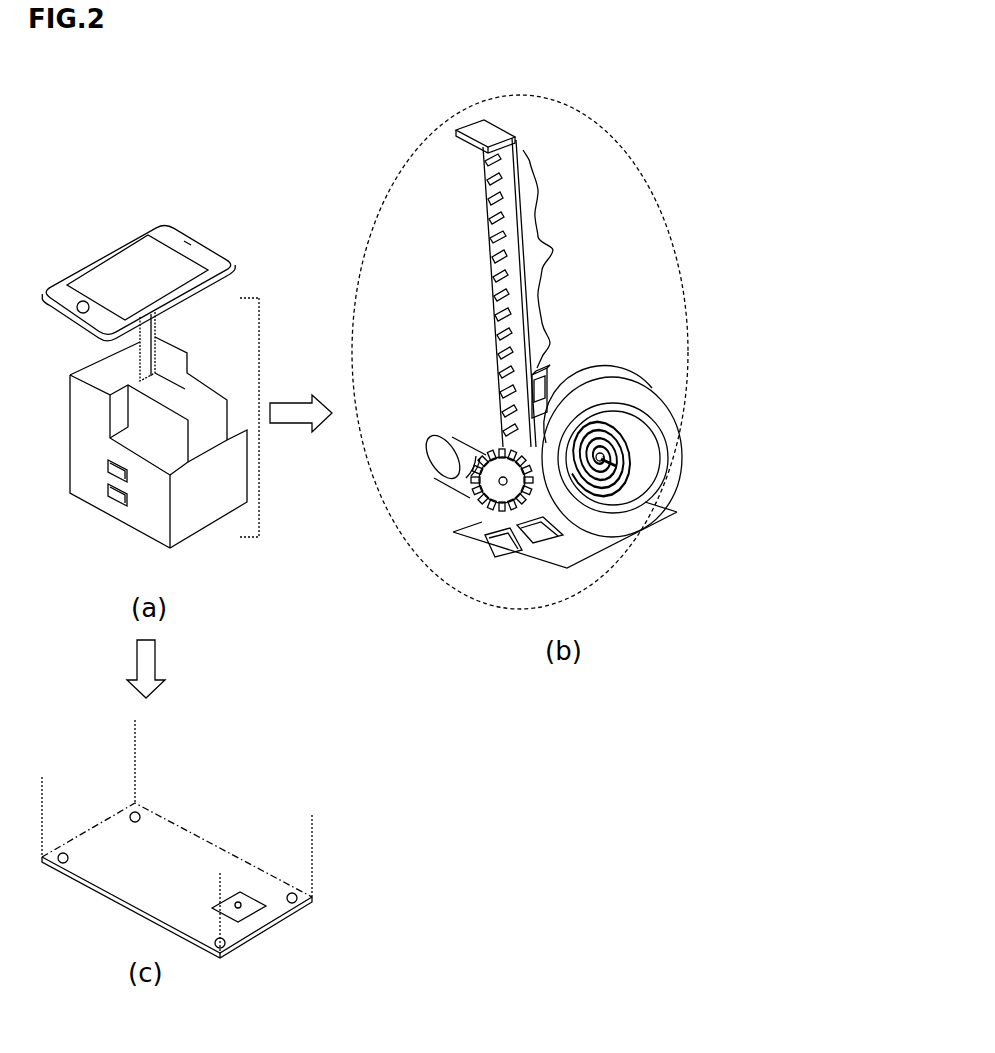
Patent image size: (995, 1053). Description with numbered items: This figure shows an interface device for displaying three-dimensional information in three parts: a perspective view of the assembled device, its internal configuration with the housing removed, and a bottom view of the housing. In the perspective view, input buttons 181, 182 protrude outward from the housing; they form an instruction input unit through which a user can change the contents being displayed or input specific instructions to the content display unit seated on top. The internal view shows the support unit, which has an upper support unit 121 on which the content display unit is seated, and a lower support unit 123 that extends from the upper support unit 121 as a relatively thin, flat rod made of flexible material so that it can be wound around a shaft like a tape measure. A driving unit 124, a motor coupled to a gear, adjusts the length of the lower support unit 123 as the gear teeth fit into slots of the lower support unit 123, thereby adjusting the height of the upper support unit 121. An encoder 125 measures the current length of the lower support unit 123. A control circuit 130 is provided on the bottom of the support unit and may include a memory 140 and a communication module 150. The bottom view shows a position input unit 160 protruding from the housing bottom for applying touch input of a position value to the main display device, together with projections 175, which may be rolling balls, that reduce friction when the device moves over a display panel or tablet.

The upper support unit 121 is at (478, 128).
The lower support unit 123 is at (553, 250).
The driving unit 124 is at (428, 452).
The encoder 125 is at (588, 362).
The control circuit 130 is at (453, 533).
The memory 140 is at (507, 545).
The communication module 150 is at (547, 540).
The position input unit 160 is at (240, 893).
The projections 175 is at (135, 803).
The input button 181 is at (108, 468).
The input button 182 is at (108, 492).